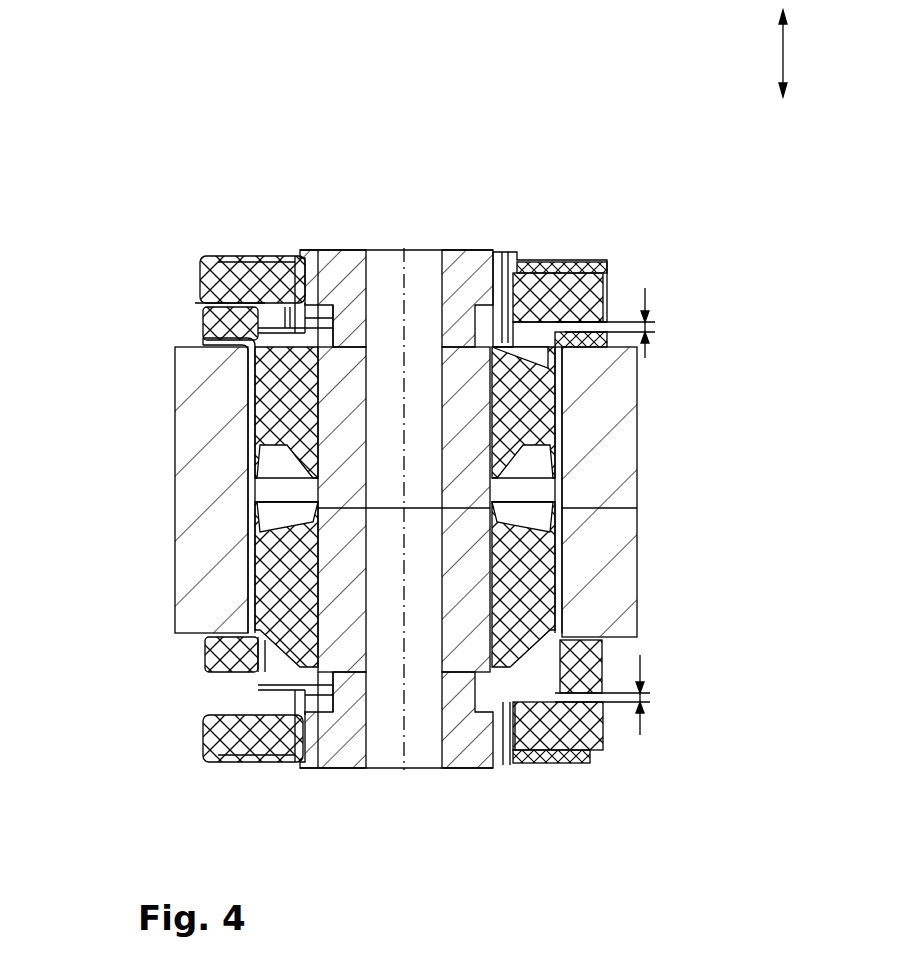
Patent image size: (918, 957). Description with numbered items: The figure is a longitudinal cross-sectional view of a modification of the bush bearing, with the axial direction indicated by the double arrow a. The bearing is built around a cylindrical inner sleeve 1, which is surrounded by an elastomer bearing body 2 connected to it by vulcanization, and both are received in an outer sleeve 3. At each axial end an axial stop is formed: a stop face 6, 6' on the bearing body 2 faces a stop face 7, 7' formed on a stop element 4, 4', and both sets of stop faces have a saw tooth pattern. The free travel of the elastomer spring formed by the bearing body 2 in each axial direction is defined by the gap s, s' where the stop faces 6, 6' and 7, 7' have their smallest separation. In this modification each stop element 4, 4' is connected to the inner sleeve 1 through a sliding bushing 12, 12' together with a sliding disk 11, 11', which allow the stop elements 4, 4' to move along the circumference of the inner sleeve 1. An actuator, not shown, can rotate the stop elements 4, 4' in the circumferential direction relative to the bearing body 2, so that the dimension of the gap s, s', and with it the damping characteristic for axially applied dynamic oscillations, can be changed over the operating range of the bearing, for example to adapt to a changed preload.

The inner sleeve 1 is at (456, 412).
The bearing body 2 is at (285, 405).
The outer sleeve 3 is at (557, 466).
The stop element 4 is at (210, 370).
The stop element 4' is at (211, 630).
The stop face 6 is at (653, 374).
The stop face 6' is at (660, 652).
The stop face 7 is at (622, 263).
The stop face 7' is at (631, 749).
The sliding disk 11 is at (187, 346).
The sliding disk 11' is at (186, 652).
The sliding bushing 12 is at (176, 297).
The sliding bushing 12' is at (176, 710).
The gap s is at (650, 323).
The gap s' is at (653, 695).
The axial displacement direction a is at (772, 53).